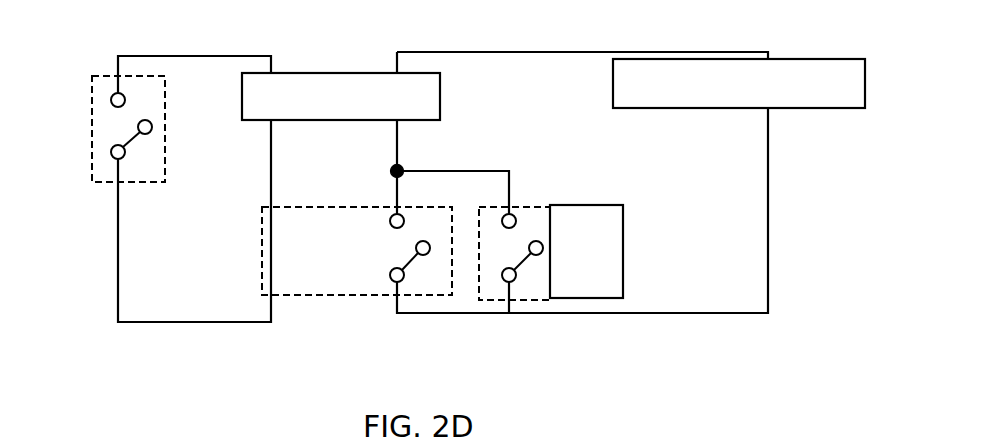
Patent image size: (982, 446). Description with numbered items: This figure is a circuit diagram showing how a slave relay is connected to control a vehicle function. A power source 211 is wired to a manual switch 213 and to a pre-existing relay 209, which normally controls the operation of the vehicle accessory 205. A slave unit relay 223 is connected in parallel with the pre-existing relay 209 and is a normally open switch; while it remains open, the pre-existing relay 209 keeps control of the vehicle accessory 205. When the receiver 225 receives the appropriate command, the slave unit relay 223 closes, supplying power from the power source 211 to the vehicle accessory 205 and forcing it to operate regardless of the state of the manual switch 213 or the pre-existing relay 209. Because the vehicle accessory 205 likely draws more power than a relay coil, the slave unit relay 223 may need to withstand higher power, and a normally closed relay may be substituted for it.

The vehicle accessory 205 is at (850, 108).
The pre-existing relay 209 is at (343, 297).
The power source 211 is at (343, 72).
The manual switch 213 is at (152, 183).
The slave unit relay 223 is at (535, 203).
The receiver 225 is at (588, 205).